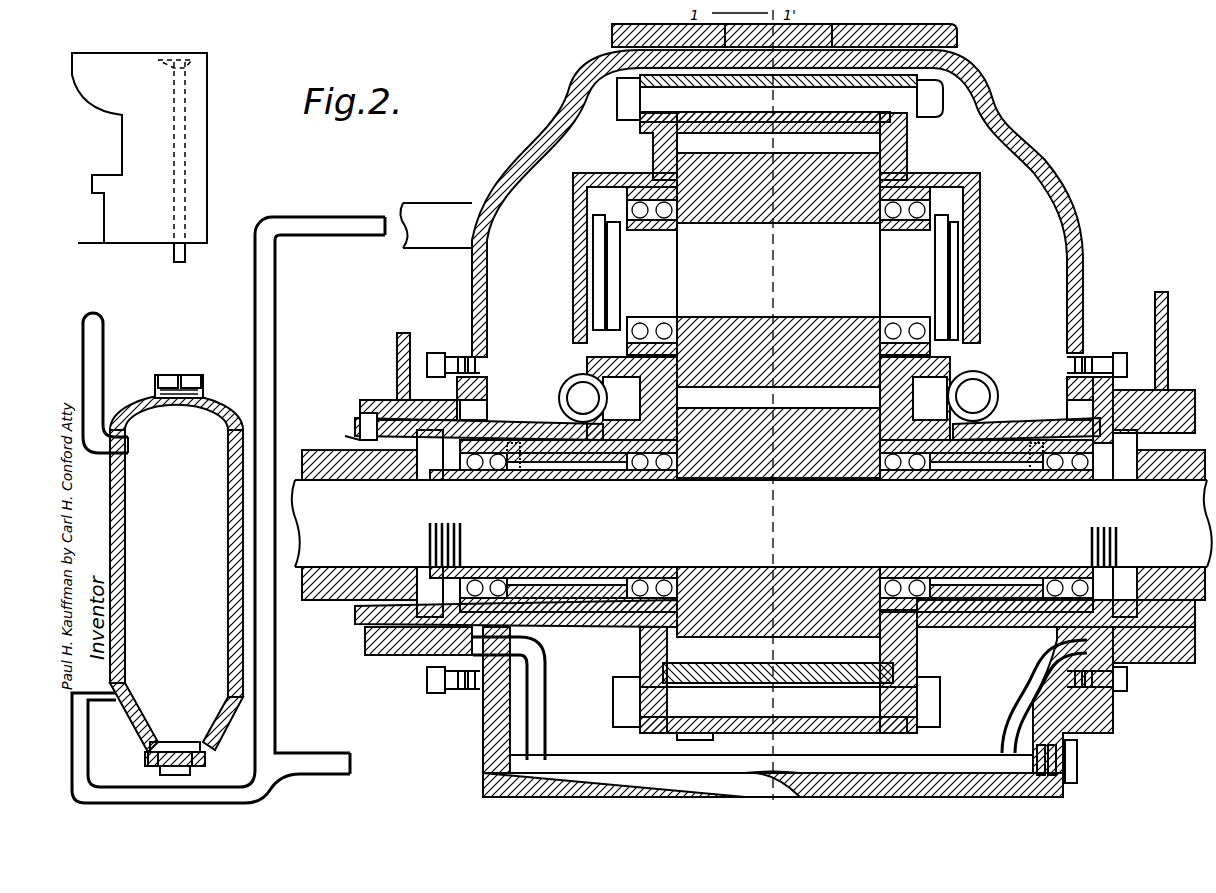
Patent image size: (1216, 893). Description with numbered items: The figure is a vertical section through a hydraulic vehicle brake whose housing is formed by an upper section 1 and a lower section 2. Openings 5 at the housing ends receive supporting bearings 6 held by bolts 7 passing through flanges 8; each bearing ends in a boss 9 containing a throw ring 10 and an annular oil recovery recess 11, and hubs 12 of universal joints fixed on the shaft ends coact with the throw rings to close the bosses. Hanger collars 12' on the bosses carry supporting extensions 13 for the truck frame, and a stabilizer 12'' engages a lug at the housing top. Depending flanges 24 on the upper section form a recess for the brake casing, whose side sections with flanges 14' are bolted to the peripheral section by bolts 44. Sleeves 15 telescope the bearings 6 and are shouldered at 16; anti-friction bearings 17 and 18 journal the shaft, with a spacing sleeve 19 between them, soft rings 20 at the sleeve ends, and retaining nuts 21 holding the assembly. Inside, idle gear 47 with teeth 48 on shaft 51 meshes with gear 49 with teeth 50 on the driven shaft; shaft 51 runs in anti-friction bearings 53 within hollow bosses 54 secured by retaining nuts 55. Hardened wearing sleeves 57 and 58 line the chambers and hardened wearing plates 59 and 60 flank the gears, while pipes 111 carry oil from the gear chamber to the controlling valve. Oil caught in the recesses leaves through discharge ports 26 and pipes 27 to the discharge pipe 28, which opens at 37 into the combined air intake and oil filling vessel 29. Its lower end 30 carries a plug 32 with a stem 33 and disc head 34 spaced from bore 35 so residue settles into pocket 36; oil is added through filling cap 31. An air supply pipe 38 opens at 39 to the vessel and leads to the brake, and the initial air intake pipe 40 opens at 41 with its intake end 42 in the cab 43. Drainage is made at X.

The upper housing section 1 is at (516, 150).
The lower housing section 2 is at (758, 500).
The openings 5 is at (487, 408).
The supporting bearings 6 is at (522, 424).
The bolts 7 is at (470, 377).
The flanges 8 is at (436, 352).
The bosses 9 is at (360, 420).
The throw ring 10 is at (345, 437).
The annular recesses 11 is at (430, 555).
The hubs 12 is at (356, 535).
The hanger collars 12' is at (775, 518).
The stabilizer 12'' is at (806, 34).
The supporting extensions 13 is at (398, 340).
The rotor flange 14' is at (771, 430).
The supporting sleeves 15 is at (552, 482).
The shoulders 16 is at (612, 482).
The anti-friction bearings 17 is at (652, 482).
The anti-friction bearings 18 is at (480, 482).
The spacing sleeve 19 is at (518, 482).
The soft metal or felt rings 20 is at (513, 472).
The retaining nuts 21 is at (617, 100).
The depending flanges 24 is at (762, 95).
The discharge ports 26 is at (310, 760).
The pipes 27 is at (546, 700).
The discharge pipe 28 is at (573, 755).
The combined air intake and oil filling vessel 29 is at (226, 410).
The lower end 30 is at (238, 725).
The filling cap 31 is at (197, 372).
The plug 32 is at (160, 772).
The stem 33 is at (148, 757).
The disc head 34 is at (183, 742).
The bore 35 is at (158, 742).
The pocket 36 is at (205, 750).
The opening 37 is at (128, 695).
The air supply pipe 38 is at (383, 214).
The opening 39 is at (226, 695).
The initial air intake pipe 40 is at (174, 258).
The opening 41 is at (128, 450).
The intake end 42 is at (168, 52).
The cab 43 is at (207, 118).
The bolts 44 is at (943, 103).
The gear 47 is at (812, 220).
The teeth 48 is at (790, 160).
The gear 49 is at (770, 575).
The teeth 50 is at (788, 600).
The shaft 51 is at (835, 222).
The anti-friction bearings 53 is at (648, 232).
The hollow bosses 54 is at (573, 284).
The retaining nuts 55 is at (593, 292).
The hardened wearing sleeve 57 is at (828, 163).
The hardened wearing sleeve 58 is at (820, 645).
The hardened wearing plate 59 is at (677, 144).
The hardened wearing plate 60 is at (677, 650).
The pipes 111 is at (566, 382).
The drainage point X is at (1073, 705).